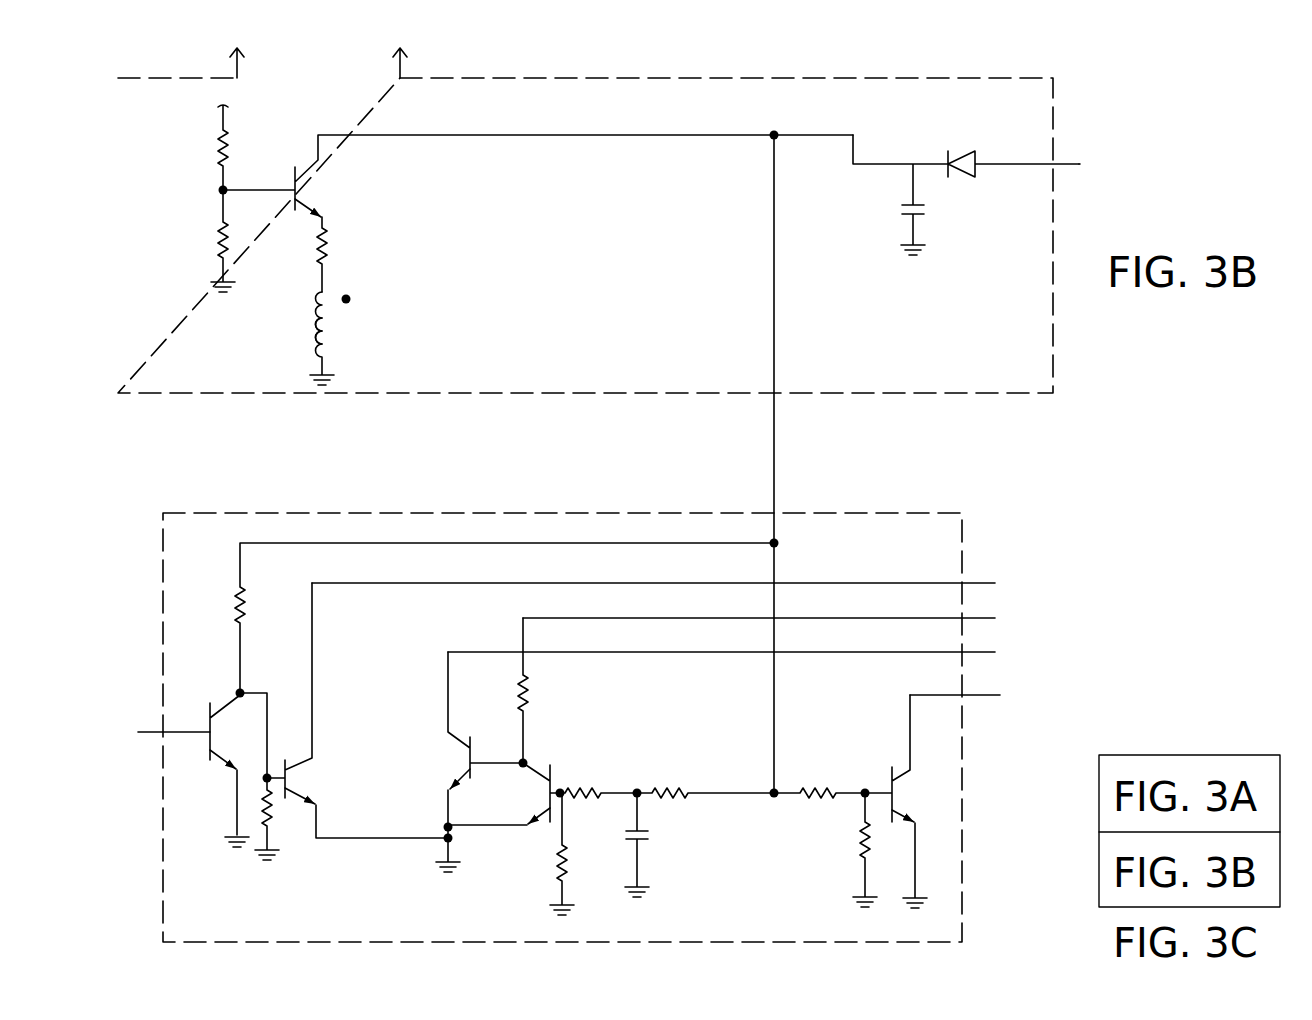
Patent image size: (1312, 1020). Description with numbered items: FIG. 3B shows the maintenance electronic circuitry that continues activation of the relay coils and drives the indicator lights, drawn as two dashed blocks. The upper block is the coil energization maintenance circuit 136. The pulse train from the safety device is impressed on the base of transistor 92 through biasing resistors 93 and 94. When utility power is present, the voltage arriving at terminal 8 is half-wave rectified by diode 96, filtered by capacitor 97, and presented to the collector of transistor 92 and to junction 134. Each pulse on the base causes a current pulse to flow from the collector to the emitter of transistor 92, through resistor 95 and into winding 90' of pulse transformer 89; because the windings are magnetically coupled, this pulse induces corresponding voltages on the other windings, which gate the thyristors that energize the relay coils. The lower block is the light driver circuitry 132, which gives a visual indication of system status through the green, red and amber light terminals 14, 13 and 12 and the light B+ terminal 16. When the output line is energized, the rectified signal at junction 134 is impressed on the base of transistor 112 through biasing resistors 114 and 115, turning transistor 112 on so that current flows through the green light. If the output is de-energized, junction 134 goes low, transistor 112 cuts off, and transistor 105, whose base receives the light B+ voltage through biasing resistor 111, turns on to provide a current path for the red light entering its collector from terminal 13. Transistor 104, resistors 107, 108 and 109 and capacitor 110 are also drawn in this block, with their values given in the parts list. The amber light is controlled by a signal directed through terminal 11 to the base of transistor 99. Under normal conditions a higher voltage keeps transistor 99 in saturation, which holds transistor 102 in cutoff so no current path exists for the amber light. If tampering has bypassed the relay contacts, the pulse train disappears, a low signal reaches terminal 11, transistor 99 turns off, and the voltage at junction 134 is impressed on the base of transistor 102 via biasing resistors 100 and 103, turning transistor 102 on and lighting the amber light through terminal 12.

The coil energization maintenance circuit 136 is at (117, 123).
The biasing resistor 93 is at (220, 136).
The biasing resistor 94 is at (221, 221).
The transistor 92 is at (295, 167).
The resistor 95 is at (330, 260).
The pulse transformer 89 is at (312, 321).
The winding 90' is at (357, 330).
The junction 134 is at (770, 142).
The capacitor 97 is at (908, 203).
The diode 96 is at (964, 172).
The terminal 8 is at (1094, 164).
The light driver circuitry 132 is at (160, 553).
The biasing resistor 100 is at (239, 598).
The terminal 11 is at (159, 732).
The transistor 99 is at (208, 722).
The transistor 102 is at (286, 764).
The biasing resistor 103 is at (278, 832).
The terminal 12 is at (722, 583).
The light B+ terminal 16 is at (807, 618).
The terminal 13 is at (775, 652).
The terminal 14 is at (1020, 695).
The transistor 105 is at (472, 775).
The biasing resistor 111 is at (532, 688).
The transistor 104 is at (552, 774).
The resistor 108 is at (586, 799).
The resistor 109 is at (567, 862).
The capacitor 110 is at (646, 840).
The resistor 107 is at (661, 790).
The biasing resistor 114 is at (815, 790).
The biasing resistor 115 is at (860, 848).
The transistor 112 is at (890, 780).